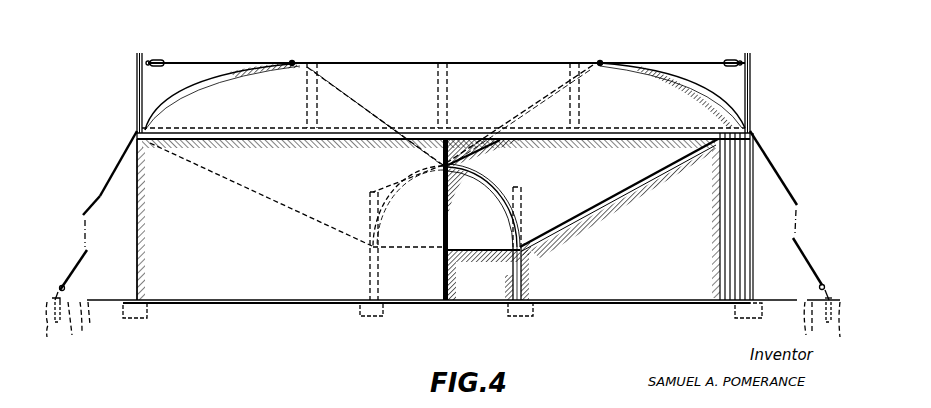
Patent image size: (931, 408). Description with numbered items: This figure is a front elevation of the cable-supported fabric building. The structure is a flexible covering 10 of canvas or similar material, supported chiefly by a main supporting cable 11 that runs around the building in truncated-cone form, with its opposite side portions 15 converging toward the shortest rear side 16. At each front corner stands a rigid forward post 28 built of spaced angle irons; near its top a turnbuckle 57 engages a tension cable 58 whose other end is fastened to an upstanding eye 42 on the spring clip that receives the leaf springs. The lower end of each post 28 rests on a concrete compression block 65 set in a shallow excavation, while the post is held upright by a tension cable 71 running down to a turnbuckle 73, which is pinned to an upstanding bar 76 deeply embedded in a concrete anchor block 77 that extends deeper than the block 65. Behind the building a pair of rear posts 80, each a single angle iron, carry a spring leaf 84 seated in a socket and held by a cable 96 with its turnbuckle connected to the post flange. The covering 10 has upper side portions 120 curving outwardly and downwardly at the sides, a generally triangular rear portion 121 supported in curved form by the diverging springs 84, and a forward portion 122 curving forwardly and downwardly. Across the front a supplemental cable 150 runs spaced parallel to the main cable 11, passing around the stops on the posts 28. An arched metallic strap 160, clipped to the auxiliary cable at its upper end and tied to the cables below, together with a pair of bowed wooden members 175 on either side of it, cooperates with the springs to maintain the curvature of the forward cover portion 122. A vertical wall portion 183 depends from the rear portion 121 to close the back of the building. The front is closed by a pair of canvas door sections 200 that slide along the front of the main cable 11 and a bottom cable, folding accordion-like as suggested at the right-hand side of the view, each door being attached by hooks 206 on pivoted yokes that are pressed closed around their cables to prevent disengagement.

The flexible covering 10 is at (516, 73).
The main supporting cable 11 is at (604, 200).
The opposite side cable portions 15 is at (650, 177).
The rear cable portion 16 is at (480, 251).
The forward post 28 is at (133, 98).
The upstanding eye 42 is at (291, 61).
The turnbuckle 57 is at (160, 61).
The tension cable 58 is at (678, 62).
The compression block 65 is at (147, 320).
The tension cable 71 is at (109, 172).
The turnbuckle 73 is at (821, 291).
The upstanding bar 76 is at (830, 293).
The anchor block 77 is at (75, 338).
The rear post 80 is at (369, 278).
The spring leaf 84 is at (484, 213).
The cable 96 is at (520, 187).
The upper side cover portion 120 is at (258, 63).
The rear curved cover portion 121 is at (425, 206).
The forward cover portion 122 is at (412, 70).
The supplemental cable 150 is at (674, 124).
The arched metallic strap 160 is at (449, 108).
The bowed member 175 is at (306, 117).
The rear vertical wall portion 183 is at (522, 265).
The door section 200 is at (714, 221).
The hook 206 is at (276, 290).